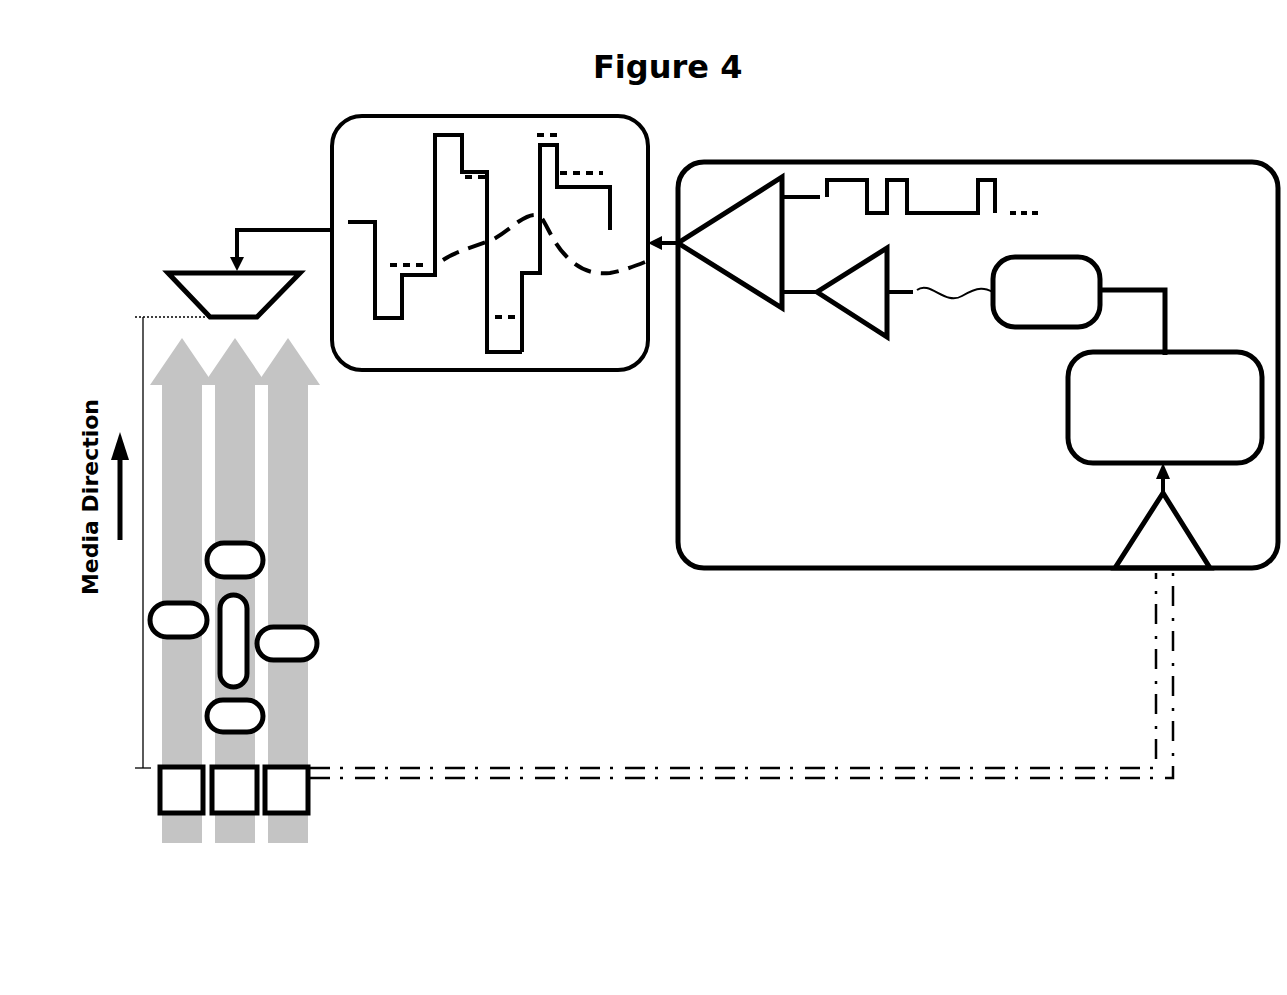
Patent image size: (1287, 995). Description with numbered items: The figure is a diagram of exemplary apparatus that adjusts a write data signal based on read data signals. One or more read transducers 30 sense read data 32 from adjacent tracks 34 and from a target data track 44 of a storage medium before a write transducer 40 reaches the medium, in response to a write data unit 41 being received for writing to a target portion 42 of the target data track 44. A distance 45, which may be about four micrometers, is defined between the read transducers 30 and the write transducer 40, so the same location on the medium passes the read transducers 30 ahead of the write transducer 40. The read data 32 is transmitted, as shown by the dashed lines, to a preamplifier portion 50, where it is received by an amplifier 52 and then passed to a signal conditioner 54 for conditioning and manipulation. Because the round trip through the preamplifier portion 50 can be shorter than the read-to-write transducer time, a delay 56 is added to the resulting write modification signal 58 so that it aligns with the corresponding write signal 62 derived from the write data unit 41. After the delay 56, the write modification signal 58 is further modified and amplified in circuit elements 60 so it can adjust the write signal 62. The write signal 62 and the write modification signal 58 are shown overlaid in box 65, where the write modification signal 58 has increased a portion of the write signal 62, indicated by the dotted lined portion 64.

The read transducers 30 is at (197, 813).
The read data 32 is at (210, 707).
The adjacent tracks 34 is at (202, 440).
The write transducer 40 is at (183, 293).
The write data unit 41 is at (942, 160).
The target portion 42 is at (253, 603).
The target data track 44 is at (253, 528).
The distance 45 is at (143, 373).
The preamplifier portion 50 is at (677, 433).
The amplifier 52 is at (1133, 538).
The signal conditioner 54 is at (1208, 352).
The delay 56 is at (1083, 257).
The write modification signal 58 is at (462, 272).
The circuit elements 60 is at (782, 308).
The write signal 62 is at (457, 122).
The dotted lined portion 64 is at (549, 120).
The box 65 is at (340, 123).